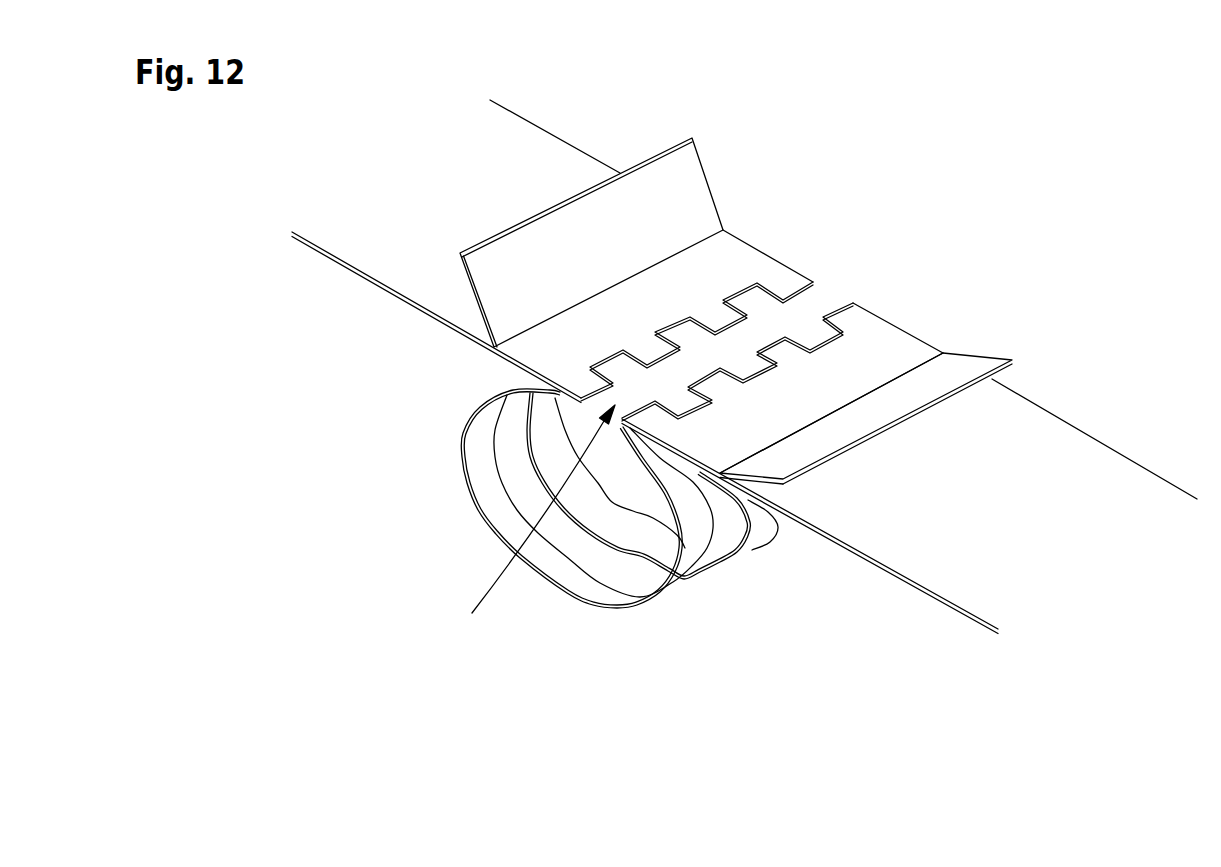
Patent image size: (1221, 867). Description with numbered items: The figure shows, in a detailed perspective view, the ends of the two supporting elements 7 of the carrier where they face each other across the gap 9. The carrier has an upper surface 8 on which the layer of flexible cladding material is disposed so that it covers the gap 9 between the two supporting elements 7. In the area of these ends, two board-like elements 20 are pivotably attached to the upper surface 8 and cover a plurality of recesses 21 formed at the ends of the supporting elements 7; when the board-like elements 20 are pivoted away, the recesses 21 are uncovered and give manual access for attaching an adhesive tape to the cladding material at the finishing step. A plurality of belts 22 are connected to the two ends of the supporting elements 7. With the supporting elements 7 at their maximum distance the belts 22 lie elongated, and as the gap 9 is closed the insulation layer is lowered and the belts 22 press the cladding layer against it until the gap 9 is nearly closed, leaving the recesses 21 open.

The supporting elements 7 is at (382, 288).
The upper surface 8 is at (447, 194).
The gap 9 is at (535, 518).
The board-like elements 20 is at (680, 192).
The recesses 21 is at (750, 296).
The belts 22 is at (594, 583).